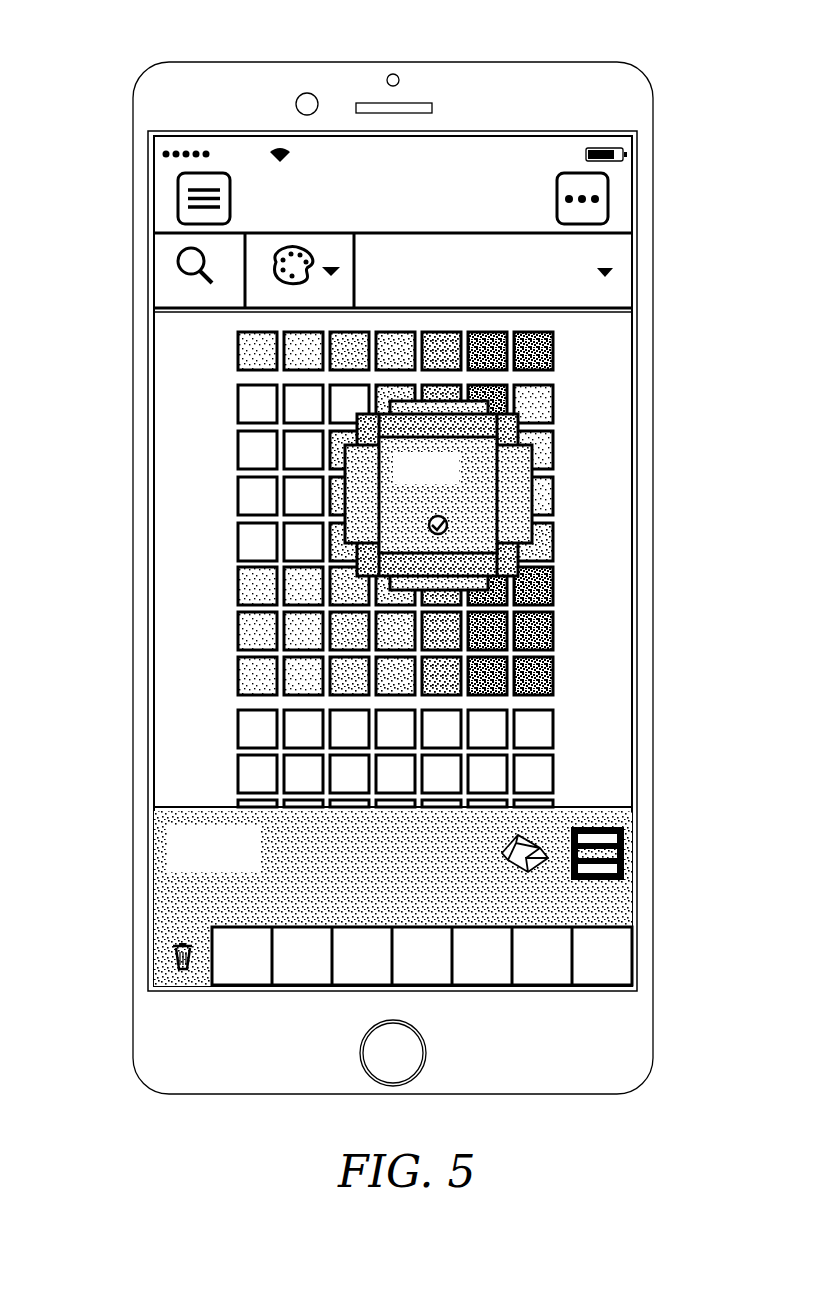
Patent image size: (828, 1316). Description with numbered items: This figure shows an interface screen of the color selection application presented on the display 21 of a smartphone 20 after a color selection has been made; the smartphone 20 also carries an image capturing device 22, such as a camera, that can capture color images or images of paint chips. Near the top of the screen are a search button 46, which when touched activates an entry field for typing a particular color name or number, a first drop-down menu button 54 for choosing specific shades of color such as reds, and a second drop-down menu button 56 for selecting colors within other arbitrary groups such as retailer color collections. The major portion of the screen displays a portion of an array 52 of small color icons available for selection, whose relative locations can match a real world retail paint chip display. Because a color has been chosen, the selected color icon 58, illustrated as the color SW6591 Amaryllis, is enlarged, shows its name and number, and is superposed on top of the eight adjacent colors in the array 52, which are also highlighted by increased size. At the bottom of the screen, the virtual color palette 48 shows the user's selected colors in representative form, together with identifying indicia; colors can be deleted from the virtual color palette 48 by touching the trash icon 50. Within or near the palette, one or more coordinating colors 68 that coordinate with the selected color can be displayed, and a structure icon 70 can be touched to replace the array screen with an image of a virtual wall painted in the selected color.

The smartphone 20 is at (92, 783).
The display 21 is at (183, 533).
The image capturing device 22 is at (307, 93).
The search button 46 is at (190, 312).
The virtual color palette 48 is at (155, 950).
The trash icon 50 is at (173, 975).
The array of different colors 52 is at (600, 525).
The first drop-down menu button 54 is at (248, 310).
The second drop-down menu button 56 is at (633, 257).
The selected color icon 58 is at (498, 479).
The coordinating colors 68 is at (624, 838).
The structure icon 70 is at (540, 868).